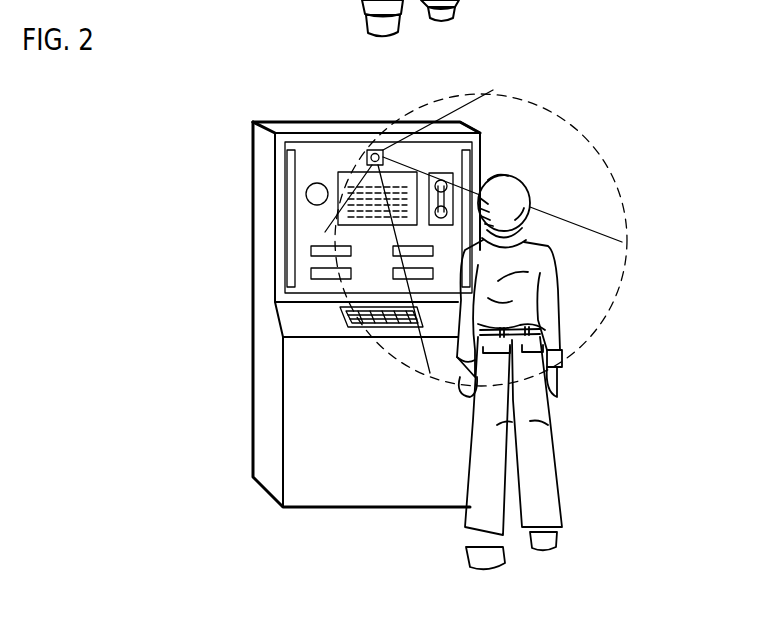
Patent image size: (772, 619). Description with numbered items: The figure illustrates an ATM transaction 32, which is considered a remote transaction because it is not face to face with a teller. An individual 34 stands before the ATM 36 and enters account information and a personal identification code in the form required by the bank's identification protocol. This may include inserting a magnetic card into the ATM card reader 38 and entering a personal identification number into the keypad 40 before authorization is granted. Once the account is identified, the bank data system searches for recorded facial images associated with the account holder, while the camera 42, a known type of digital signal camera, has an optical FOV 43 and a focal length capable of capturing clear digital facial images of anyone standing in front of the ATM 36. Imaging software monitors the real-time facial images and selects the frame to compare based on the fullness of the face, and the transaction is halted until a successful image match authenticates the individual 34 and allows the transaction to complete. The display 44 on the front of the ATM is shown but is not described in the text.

The ATM transaction 32 is at (642, 131).
The individual 34 is at (553, 267).
The ATM 36 is at (266, 117).
The ATM card reader 38 is at (411, 251).
The keypad 40 is at (345, 317).
The camera 42 is at (369, 150).
The optical FOV 43 is at (567, 116).
The display 44 is at (349, 186).